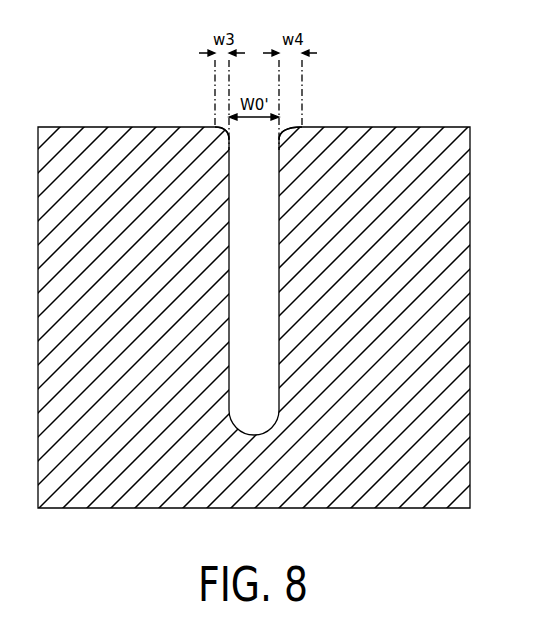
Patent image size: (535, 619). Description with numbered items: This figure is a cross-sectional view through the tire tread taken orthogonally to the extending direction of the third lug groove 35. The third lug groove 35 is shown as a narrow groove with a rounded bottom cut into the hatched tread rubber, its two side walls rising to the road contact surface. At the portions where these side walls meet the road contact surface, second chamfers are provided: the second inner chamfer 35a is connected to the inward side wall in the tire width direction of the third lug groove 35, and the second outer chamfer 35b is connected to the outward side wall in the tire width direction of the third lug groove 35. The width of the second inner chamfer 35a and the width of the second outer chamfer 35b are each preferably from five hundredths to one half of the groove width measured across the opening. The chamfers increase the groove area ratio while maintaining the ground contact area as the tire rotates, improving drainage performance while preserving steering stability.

The third lug groove 35 is at (279, 198).
The second inner chamfer 35a is at (223, 132).
The second outer chamfer 35b is at (291, 133).